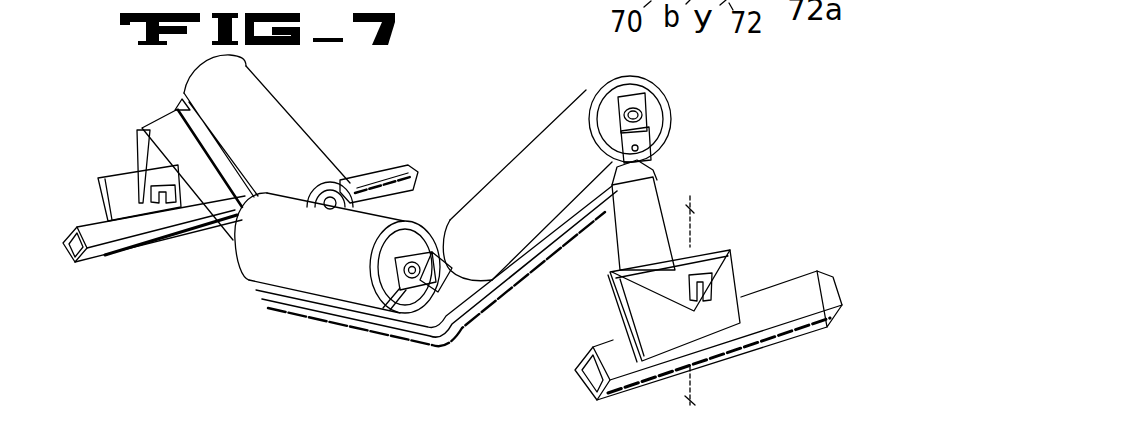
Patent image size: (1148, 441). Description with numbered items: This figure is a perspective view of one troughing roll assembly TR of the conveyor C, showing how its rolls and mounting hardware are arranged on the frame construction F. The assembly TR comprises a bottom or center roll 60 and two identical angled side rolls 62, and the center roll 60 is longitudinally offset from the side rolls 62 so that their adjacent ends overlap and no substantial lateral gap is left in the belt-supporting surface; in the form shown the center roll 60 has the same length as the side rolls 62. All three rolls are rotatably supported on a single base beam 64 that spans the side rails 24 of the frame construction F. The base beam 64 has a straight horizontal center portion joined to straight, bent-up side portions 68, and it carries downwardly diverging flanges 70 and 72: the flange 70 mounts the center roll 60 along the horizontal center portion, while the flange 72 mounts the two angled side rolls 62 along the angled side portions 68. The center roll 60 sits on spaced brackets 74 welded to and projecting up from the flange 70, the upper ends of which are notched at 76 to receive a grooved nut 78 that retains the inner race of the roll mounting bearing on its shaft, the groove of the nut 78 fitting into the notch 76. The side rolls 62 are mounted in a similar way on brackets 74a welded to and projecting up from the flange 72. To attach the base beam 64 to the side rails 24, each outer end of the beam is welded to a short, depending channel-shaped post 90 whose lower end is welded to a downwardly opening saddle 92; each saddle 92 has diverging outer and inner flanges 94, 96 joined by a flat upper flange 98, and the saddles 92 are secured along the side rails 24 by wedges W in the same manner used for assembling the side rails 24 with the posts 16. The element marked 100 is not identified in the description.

The post 16 is at (692, 208).
The side rail 24 is at (410, 164).
The center roll 60 is at (317, 252).
The side roll 62 is at (293, 152).
The base beam 64 is at (287, 302).
The bent up side portion 68 is at (227, 232).
The flange 70 is at (410, 327).
The flange 72 is at (187, 122).
The bracket 74 is at (433, 267).
The bracket 74a is at (182, 100).
The notch 76 is at (402, 262).
The grooved nut 78 is at (393, 295).
The channel-shaped post 90 is at (140, 140).
The saddle 92 is at (105, 175).
The outer flange 94 is at (717, 280).
The inner flange 96 is at (118, 215).
The upper flange 98 is at (713, 255).
The rail engaging corner 100 is at (93, 197).
The conveyor C is at (472, 100).
The frame construction F is at (393, 161).
The troughing roll assembly TR is at (668, 117).
The wedge W is at (165, 197).